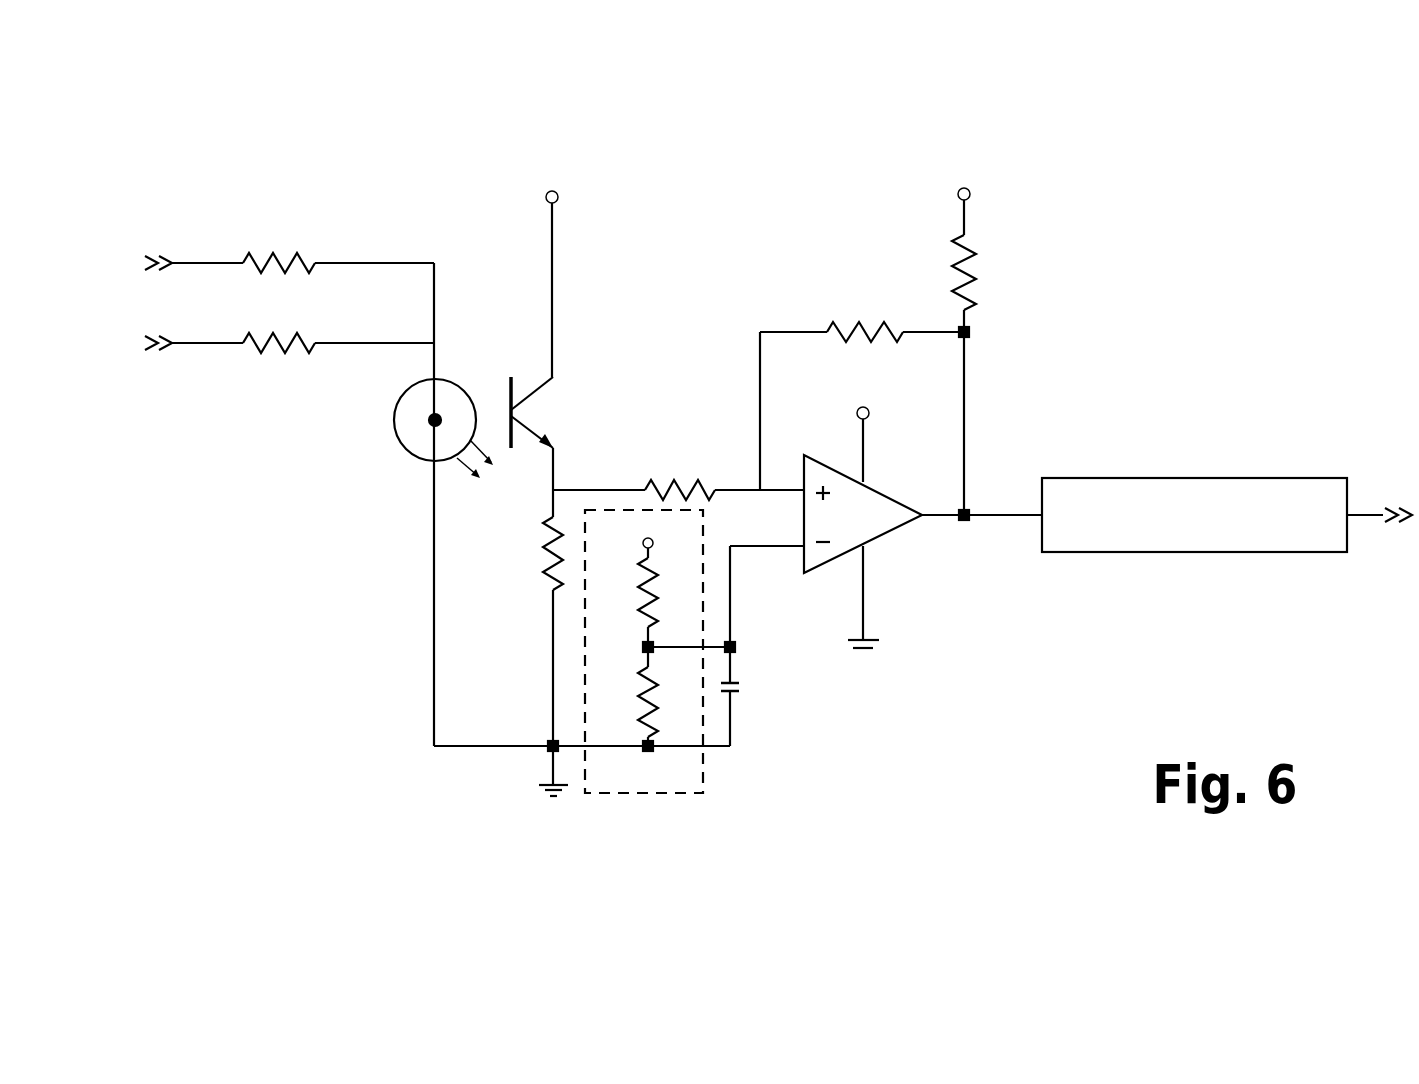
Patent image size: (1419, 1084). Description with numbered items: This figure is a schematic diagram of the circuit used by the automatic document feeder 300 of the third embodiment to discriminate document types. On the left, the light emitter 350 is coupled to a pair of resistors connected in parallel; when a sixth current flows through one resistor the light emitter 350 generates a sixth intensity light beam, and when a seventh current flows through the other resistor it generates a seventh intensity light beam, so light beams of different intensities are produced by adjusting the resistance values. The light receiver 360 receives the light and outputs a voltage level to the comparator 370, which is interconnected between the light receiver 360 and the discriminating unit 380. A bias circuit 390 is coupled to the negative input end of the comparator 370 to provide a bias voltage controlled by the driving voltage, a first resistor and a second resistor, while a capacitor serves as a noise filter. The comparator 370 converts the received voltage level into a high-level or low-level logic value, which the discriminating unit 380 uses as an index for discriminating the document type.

The automatic document feeder 300 is at (1141, 187).
The light emitter 350 is at (405, 425).
The light receiver 360 is at (538, 412).
The comparator 370 is at (880, 520).
The discriminating unit 380 is at (1135, 488).
The bias circuit 390 is at (662, 787).